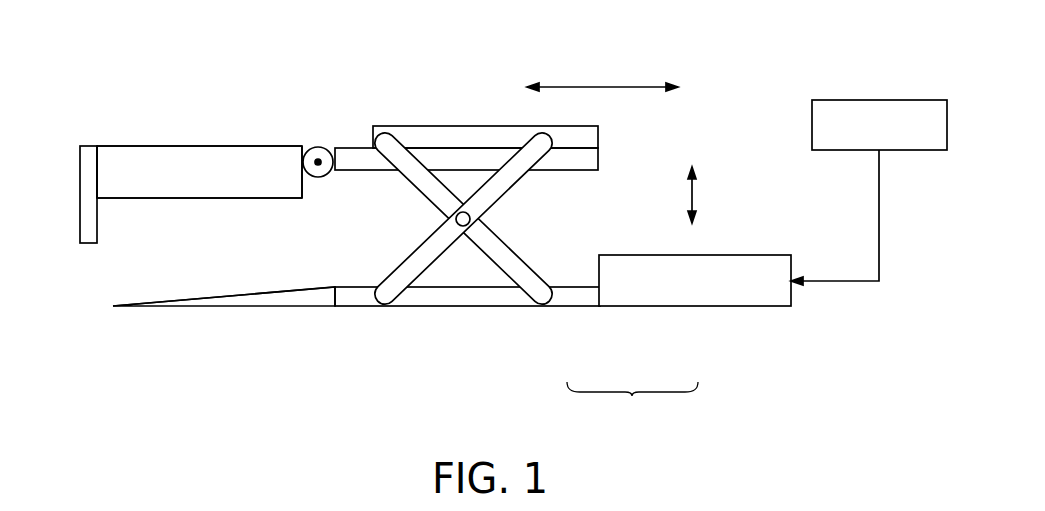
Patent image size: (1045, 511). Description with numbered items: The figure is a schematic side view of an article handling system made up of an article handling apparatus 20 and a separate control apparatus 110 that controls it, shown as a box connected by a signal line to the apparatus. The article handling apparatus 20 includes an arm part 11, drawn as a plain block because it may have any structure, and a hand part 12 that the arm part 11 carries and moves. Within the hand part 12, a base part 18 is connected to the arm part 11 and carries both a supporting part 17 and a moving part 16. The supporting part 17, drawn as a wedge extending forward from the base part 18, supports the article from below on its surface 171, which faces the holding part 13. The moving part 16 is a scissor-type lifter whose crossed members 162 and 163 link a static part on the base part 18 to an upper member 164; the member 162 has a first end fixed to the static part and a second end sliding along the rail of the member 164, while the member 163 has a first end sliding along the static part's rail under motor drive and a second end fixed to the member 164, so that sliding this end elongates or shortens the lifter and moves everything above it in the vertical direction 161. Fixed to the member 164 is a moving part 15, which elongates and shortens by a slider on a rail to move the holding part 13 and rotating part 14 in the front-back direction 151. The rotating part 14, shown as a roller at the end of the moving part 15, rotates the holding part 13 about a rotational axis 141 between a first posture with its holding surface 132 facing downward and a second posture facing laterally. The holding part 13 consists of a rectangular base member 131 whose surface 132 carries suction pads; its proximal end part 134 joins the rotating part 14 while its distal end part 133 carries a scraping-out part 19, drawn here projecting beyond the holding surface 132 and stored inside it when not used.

The arm part 11 is at (676, 306).
The hand part 12 is at (548, 318).
The holding part 13 is at (200, 175).
The rotating part 14 is at (318, 147).
The moving part 15 is at (598, 160).
The moving part 16 is at (472, 218).
The supporting part 17 is at (177, 308).
The base part 18 is at (352, 307).
The scraping-out part 19 is at (80, 190).
The article handling apparatus 20 is at (632, 403).
The control apparatus 110 is at (910, 100).
The base member 131 is at (267, 145).
The holding surface 132 is at (287, 198).
The distal end part 133 is at (97, 168).
The proximal end part 134 is at (302, 187).
The rotational axis 141 is at (318, 162).
The linear direction 151 is at (617, 86).
The linear direction 161 is at (695, 195).
The member 162 is at (410, 250).
The member 163 is at (522, 257).
The member 164 is at (575, 127).
The surface 171 is at (232, 293).